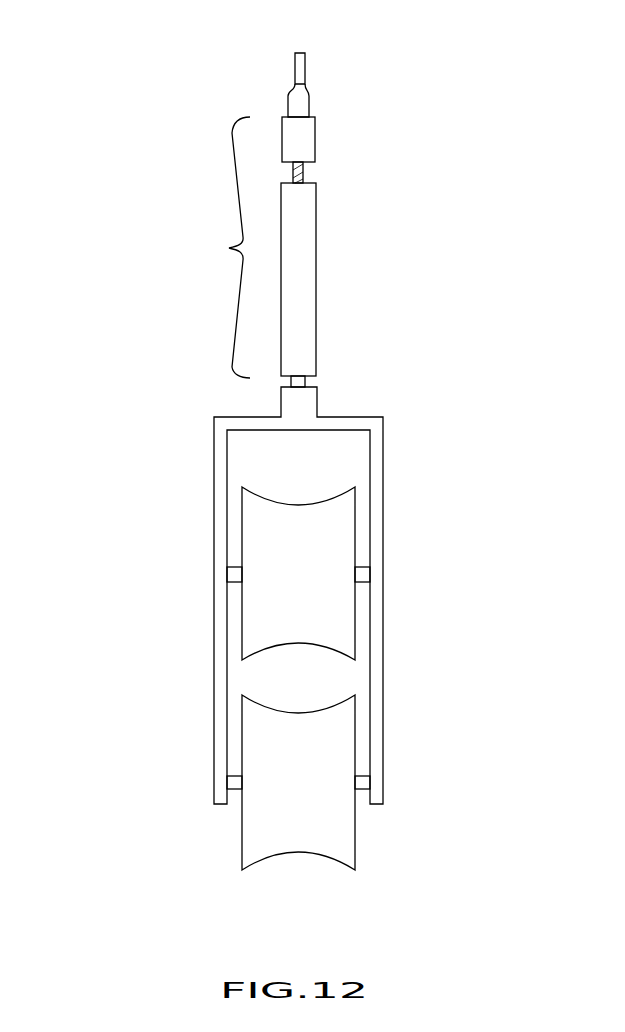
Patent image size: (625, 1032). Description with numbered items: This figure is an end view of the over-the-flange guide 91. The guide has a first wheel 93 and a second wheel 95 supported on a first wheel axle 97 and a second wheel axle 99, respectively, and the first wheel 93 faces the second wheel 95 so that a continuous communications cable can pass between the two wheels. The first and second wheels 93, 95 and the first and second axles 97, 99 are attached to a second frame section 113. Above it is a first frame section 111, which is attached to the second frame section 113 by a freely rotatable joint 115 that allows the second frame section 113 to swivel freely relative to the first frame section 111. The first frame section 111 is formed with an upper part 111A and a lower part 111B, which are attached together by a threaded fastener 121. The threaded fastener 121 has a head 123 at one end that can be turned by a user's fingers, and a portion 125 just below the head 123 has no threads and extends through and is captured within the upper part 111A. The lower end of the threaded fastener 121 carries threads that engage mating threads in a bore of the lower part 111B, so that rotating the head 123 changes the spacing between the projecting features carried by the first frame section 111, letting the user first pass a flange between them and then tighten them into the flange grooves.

The over-the-flange guide 91 is at (275, 630).
The first wheel 93 is at (327, 541).
The second wheel 95 is at (335, 752).
The first wheel axle 97 is at (362, 578).
The second wheel axle 99 is at (362, 790).
The first frame section 111 is at (217, 247).
The upper part 111A is at (310, 138).
The lower part 111B is at (309, 252).
The second frame section 113 is at (363, 418).
The freely rotatable joint 115 is at (334, 376).
The threaded fastener 121 is at (303, 173).
The head 123 is at (302, 65).
The portion 125 is at (302, 108).